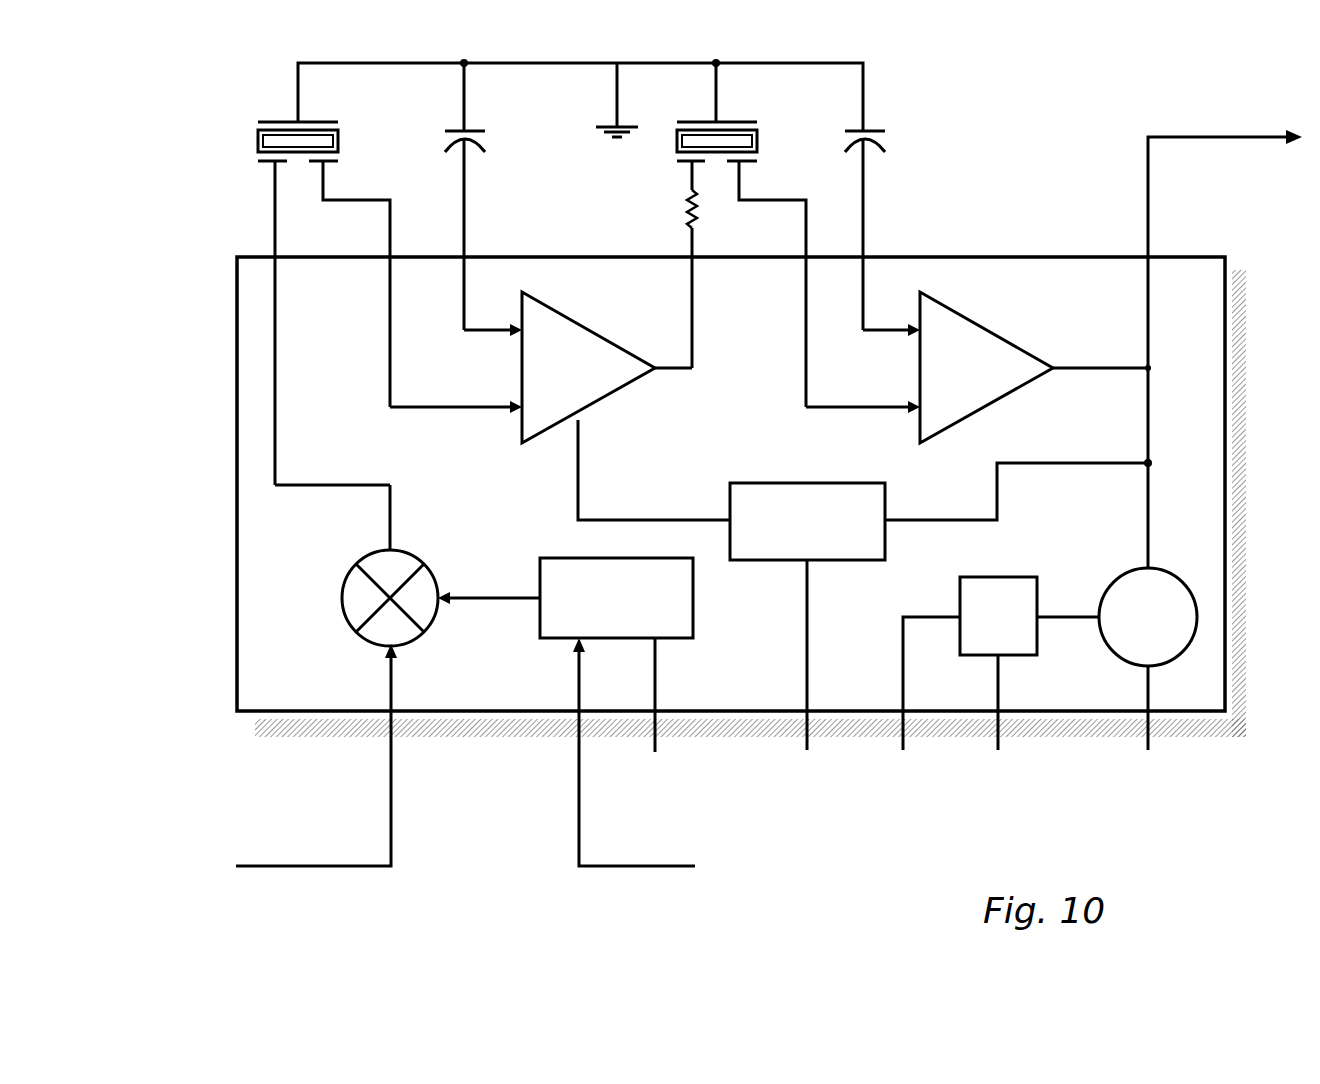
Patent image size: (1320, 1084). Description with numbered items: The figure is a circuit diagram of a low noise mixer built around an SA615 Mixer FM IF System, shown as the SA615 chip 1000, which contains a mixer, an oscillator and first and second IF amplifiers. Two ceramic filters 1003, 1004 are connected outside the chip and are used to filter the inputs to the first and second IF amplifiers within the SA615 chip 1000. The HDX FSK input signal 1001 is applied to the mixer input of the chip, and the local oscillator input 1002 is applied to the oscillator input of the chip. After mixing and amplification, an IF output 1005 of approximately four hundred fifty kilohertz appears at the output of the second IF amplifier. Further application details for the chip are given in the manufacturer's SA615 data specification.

The SA615 chip 1000 is at (199, 617).
The HDX FSK input signal 1001 is at (313, 873).
The local oscillator input 1002 is at (636, 873).
The ceramic filter 1003 is at (257, 180).
The ceramic filter 1004 is at (653, 158).
The 450 KHz IF output 1005 is at (1145, 108).